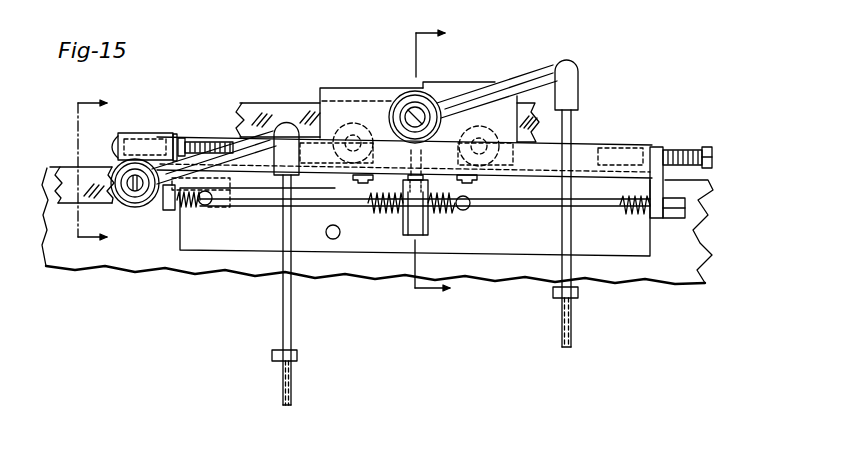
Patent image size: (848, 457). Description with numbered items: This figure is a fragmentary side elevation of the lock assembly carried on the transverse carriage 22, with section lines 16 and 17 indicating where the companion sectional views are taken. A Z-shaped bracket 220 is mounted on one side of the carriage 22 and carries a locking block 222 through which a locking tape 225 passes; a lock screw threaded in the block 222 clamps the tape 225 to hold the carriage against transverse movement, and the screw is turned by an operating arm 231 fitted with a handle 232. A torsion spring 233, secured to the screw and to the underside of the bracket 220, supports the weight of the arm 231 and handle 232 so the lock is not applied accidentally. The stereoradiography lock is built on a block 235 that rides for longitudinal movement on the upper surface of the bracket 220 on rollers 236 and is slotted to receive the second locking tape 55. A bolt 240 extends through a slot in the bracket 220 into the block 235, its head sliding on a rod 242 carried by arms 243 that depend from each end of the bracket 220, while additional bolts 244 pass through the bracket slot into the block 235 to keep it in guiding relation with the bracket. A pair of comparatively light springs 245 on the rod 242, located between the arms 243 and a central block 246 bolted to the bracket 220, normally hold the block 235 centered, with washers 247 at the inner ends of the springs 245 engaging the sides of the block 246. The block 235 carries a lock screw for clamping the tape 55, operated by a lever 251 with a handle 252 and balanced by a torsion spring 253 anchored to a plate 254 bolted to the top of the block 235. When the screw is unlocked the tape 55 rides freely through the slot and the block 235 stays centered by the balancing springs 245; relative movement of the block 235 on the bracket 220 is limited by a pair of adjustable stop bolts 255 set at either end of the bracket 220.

The section line 16- 16 is at (81, 167).
The section line 17- 17 is at (424, 160).
The transverse carriage 22 is at (693, 243).
The locking tape 55 is at (265, 102).
The Z-shaped bracket 220 is at (647, 256).
The locking block 222 is at (140, 132).
The locking tape 225 is at (68, 180).
The operating arm 231 is at (243, 133).
The handle 232 is at (278, 327).
The torsion spring 233 is at (137, 205).
The block 235 is at (333, 90).
The rollers 236 is at (353, 122).
The bolt 240 is at (413, 200).
The rod 242 is at (256, 178).
The arms 243 is at (170, 212).
The bolts 244 is at (360, 181).
The springs 245 is at (197, 210).
The block 246 is at (430, 222).
The washers 247 is at (402, 218).
The operating lever 251 is at (545, 68).
The handle 252 is at (573, 328).
The torsion spring 253 is at (423, 97).
The plate 254 is at (460, 87).
The adjustable stop bolts 255 is at (208, 140).